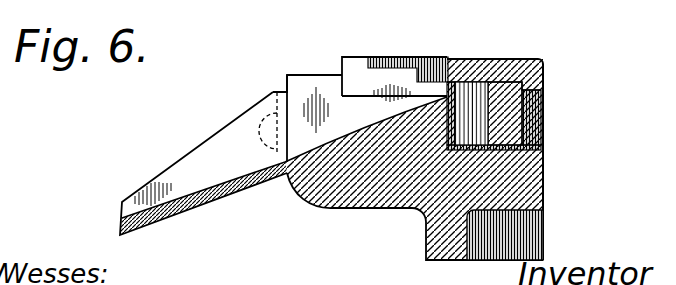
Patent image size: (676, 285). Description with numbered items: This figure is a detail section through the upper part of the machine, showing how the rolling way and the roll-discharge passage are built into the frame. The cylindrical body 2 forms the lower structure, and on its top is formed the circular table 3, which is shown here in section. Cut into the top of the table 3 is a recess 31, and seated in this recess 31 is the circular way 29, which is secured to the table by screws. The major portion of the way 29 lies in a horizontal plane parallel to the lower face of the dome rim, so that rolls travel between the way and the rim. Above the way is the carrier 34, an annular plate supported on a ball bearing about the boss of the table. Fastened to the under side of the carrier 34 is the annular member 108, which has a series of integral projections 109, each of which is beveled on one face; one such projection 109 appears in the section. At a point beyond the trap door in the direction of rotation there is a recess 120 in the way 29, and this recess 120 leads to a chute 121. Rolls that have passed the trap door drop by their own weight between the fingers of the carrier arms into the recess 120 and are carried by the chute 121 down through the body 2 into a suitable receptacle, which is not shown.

The cylindrical body 2 is at (443, 242).
The circular table 3 is at (385, 187).
The circular way 29 is at (387, 82).
The recess 31 is at (353, 90).
The carrier 34 is at (508, 72).
The annular member 108 is at (503, 120).
The projection 109 is at (470, 107).
The recess 120 is at (324, 118).
The chute 121 is at (228, 147).